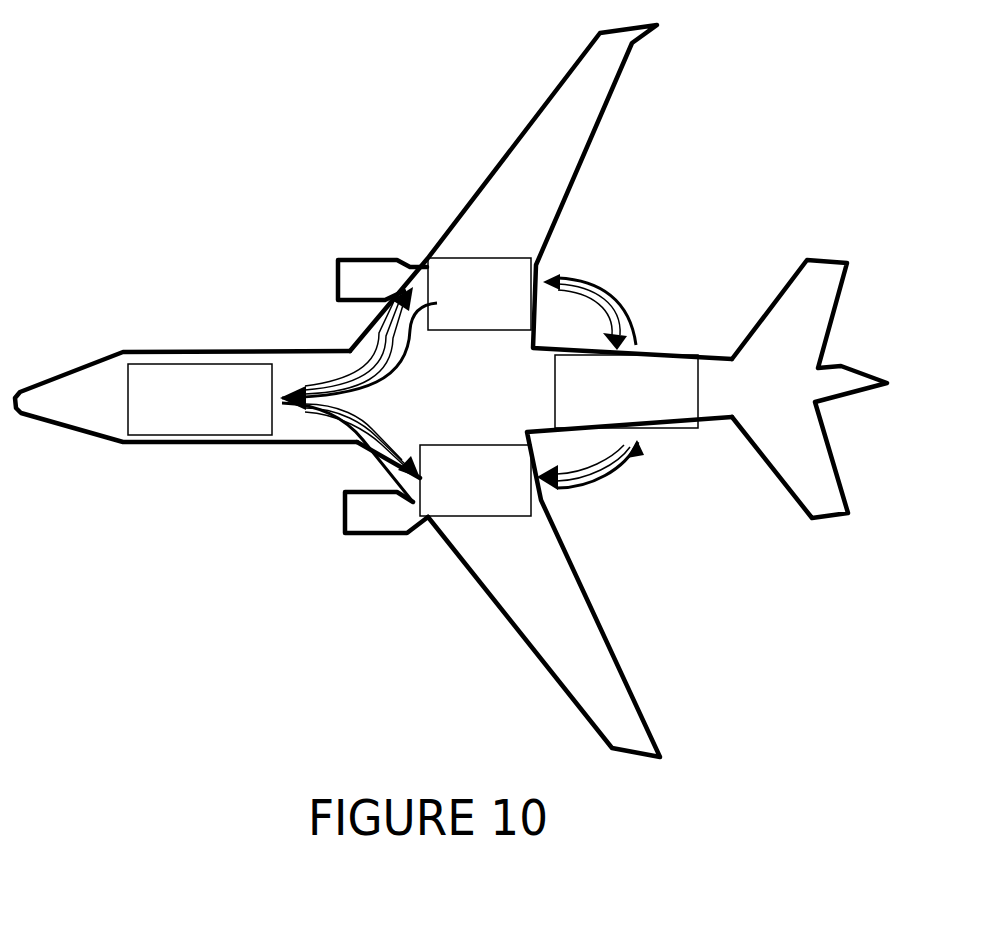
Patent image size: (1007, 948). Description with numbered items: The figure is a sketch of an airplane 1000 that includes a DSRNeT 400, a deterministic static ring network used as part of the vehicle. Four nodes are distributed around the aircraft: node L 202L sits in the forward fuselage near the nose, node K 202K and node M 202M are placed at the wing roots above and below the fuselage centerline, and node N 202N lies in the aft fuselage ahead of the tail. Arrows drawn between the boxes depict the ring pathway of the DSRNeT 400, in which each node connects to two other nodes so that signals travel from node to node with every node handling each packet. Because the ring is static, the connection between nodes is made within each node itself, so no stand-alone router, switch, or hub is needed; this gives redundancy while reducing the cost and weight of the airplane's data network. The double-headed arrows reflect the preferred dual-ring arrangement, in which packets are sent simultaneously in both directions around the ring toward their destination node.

The airplane 1000 is at (451, 391).
The DSRNeT 400 is at (330, 362).
The node K 202K is at (479, 294).
The node L 202L is at (200, 399).
The node M 202M is at (475, 480).
The node N 202N is at (626, 391).